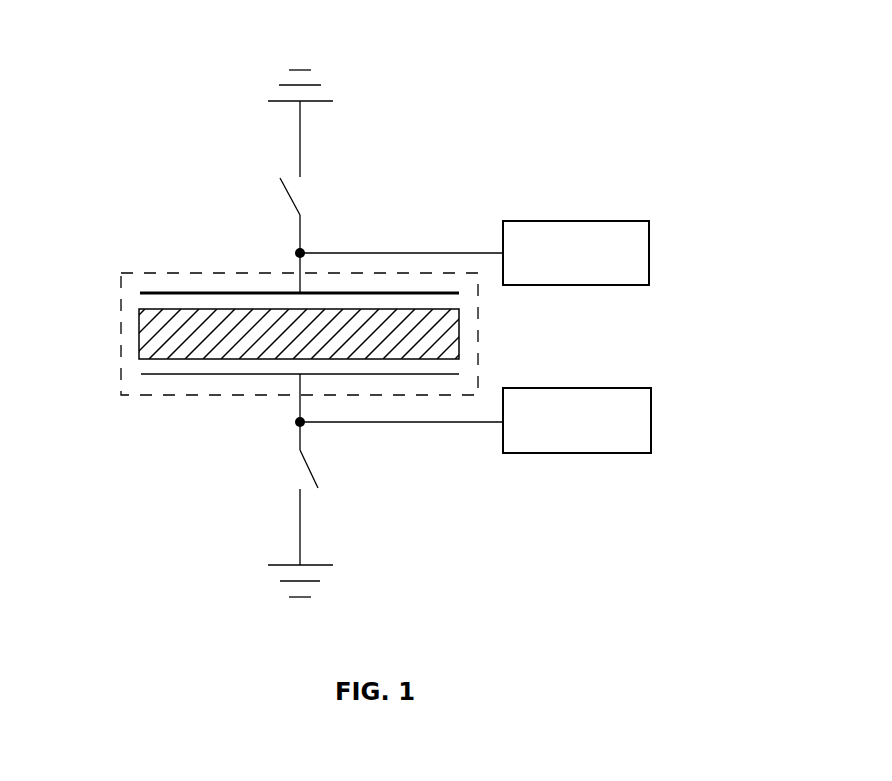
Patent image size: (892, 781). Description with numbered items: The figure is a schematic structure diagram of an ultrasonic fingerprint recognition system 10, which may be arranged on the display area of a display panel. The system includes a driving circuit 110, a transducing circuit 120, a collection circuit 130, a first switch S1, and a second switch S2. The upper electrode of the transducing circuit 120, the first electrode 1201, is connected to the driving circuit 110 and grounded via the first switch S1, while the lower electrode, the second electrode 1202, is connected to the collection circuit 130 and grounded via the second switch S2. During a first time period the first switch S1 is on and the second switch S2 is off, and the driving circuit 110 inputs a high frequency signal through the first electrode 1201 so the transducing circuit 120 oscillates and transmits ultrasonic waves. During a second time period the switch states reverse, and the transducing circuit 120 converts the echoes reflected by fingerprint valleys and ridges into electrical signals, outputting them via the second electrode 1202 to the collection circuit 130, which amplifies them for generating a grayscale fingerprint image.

The ultrasonic fingerprint recognition system 10 is at (561, 31).
The driving circuit 110 is at (600, 221).
The transducing circuit 120 is at (264, 334).
The first electrode 1201 is at (150, 292).
The second electrode 1202 is at (202, 373).
The collection circuit 130 is at (599, 388).
The first switch S1 is at (318, 190).
The second switch S2 is at (330, 477).